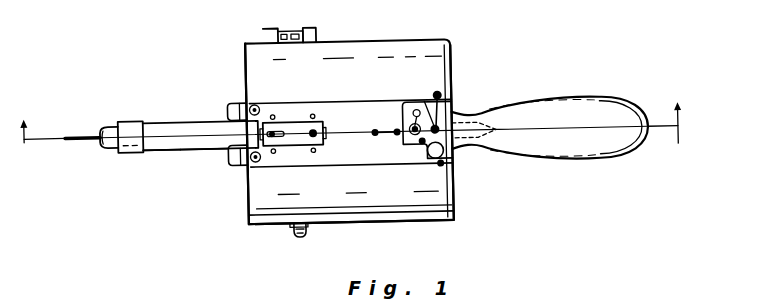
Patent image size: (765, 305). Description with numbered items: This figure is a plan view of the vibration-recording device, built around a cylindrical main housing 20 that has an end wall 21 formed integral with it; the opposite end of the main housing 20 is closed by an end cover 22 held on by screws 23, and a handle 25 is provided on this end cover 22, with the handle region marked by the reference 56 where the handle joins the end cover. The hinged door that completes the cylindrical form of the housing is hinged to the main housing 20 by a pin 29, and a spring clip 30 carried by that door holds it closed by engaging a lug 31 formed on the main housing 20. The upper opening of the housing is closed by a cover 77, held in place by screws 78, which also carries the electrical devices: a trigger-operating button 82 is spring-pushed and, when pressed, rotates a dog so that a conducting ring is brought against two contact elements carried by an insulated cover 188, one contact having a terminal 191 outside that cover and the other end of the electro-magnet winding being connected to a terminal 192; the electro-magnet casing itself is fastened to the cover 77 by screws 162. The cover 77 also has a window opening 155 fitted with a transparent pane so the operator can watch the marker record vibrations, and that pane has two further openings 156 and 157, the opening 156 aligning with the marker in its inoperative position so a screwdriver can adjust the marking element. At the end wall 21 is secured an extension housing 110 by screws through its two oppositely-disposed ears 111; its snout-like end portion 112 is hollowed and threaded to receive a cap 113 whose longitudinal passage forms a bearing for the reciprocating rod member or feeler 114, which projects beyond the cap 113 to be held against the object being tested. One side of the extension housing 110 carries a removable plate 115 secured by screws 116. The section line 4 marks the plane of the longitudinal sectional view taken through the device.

The section line 4- 4 is at (348, 145).
The main housing 20 is at (375, 48).
The end wall 21 is at (246, 70).
The end cover 22 is at (456, 214).
The screws 23 is at (453, 68).
The handle 25 is at (520, 106).
The pin 29 is at (267, 30).
The spring clip 30 is at (294, 237).
The lug 31 is at (288, 231).
The handle tang 56 is at (469, 124).
The cover 77 is at (343, 101).
The screws 78 is at (257, 103).
The operating button 82 is at (428, 164).
The extension housing 110 is at (164, 120).
The ears 111 is at (231, 101).
The snout-like end portion 112 is at (126, 117).
The cap 113 is at (110, 122).
The feeler 114 is at (82, 136).
The removable plate 115 is at (192, 147).
The screws 116 is at (163, 147).
The opening 155 is at (298, 128).
The opening 156 is at (282, 140).
The opening 157 is at (324, 145).
The screws 162 is at (397, 130).
The insulated cover 188 is at (403, 114).
The terminal 191 is at (438, 93).
The terminal 192 is at (417, 111).